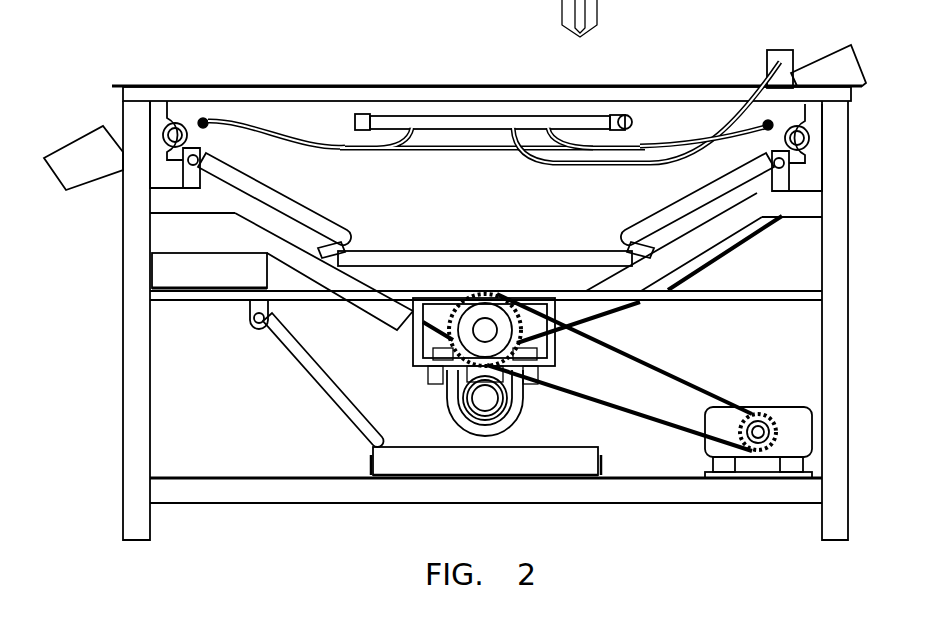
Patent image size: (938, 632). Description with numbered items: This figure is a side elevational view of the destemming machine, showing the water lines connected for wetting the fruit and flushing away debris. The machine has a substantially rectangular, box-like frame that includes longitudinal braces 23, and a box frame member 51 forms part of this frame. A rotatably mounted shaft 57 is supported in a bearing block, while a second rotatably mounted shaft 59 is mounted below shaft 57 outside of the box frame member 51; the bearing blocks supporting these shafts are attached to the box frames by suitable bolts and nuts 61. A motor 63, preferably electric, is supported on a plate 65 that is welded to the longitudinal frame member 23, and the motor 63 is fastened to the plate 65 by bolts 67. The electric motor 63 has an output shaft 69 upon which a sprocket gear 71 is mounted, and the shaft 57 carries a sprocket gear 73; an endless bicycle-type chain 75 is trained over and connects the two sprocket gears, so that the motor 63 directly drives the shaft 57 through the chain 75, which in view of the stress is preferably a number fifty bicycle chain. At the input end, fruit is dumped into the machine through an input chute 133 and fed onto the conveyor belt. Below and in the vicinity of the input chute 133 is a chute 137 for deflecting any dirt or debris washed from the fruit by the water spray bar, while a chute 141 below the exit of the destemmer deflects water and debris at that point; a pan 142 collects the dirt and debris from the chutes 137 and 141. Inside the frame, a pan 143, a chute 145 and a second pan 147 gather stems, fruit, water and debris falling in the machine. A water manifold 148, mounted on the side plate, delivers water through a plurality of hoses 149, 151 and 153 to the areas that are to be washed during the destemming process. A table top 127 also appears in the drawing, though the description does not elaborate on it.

The longitudinal brace 23 is at (600, 508).
The box frame member 51 is at (410, 355).
The rotatably mounted shaft 57 is at (467, 295).
The second rotatably mounted shaft 59 is at (475, 410).
The bolts and nuts 61 is at (447, 380).
The motor 63 is at (785, 405).
The plate 65 is at (697, 477).
The bolts 67 is at (773, 472).
The output shaft 69 is at (743, 423).
The sprocket gear 71 is at (743, 427).
The sprocket gear 73 is at (517, 295).
The endless bicycle-type chain 75 is at (612, 343).
The table top 127 is at (270, 117).
The input chute 133 is at (830, 60).
The chute 137 is at (660, 216).
The chute 141 is at (297, 207).
The pan 142 is at (375, 258).
The pan 143 is at (213, 268).
The chute 145 is at (327, 390).
The second pan 147 is at (508, 457).
The water manifold 148 is at (427, 117).
The hose 149 is at (345, 140).
The hose 151 is at (553, 163).
The hose 153 is at (680, 143).